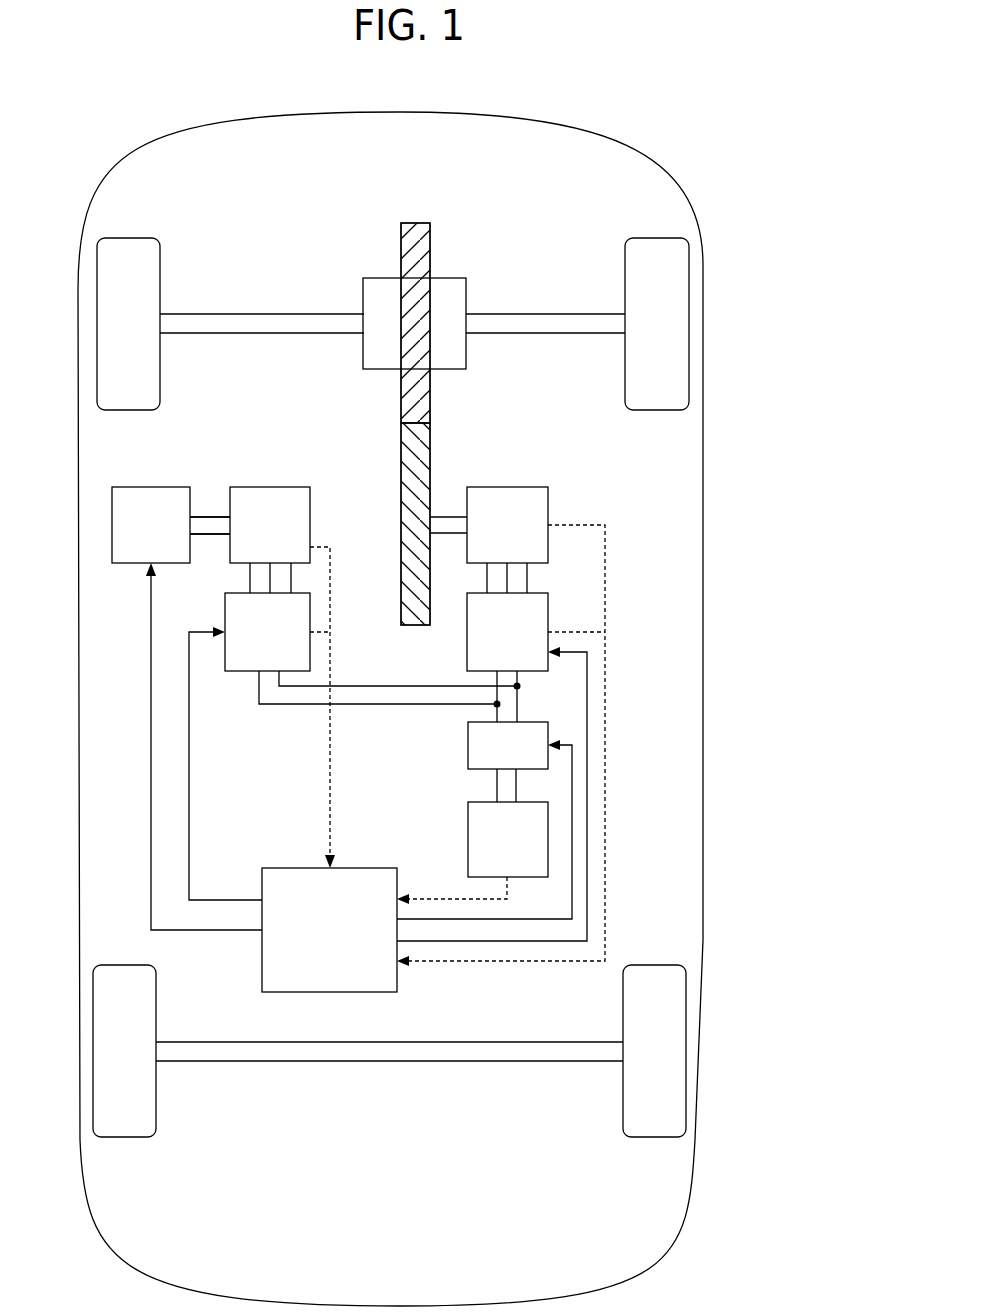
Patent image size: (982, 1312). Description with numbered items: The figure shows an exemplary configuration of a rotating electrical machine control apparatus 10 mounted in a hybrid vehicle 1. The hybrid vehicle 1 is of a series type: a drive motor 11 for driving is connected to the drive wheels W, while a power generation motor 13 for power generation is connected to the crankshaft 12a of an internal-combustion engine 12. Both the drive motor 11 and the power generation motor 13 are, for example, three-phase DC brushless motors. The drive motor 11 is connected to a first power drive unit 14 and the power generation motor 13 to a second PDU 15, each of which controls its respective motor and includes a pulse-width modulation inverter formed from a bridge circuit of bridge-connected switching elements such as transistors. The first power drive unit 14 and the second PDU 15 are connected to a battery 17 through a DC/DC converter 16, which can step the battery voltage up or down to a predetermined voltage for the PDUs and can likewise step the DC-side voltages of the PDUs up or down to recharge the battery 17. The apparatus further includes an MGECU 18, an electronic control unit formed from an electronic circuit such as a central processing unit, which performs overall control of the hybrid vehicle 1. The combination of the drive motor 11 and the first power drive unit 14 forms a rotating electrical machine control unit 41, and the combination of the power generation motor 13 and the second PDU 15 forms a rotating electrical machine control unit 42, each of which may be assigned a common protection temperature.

The hybrid vehicle 1 is at (767, 166).
The rotating electrical machine control apparatus 10 is at (672, 466).
The drive motor 11 is at (540, 487).
The internal-combustion engine 12 is at (144, 487).
The crankshaft 12a is at (206, 514).
The power generation motor 13 is at (300, 487).
The first power drive unit 14 is at (548, 612).
The second PDU 15 is at (234, 672).
The DC/DC converter 16 is at (468, 745).
The battery 17 is at (468, 838).
The MGECU 18 is at (275, 868).
The rotating electrical machine control unit 41 is at (588, 534).
The rotating electrical machine control unit 42 is at (322, 566).
The drive wheels W is at (128, 238).